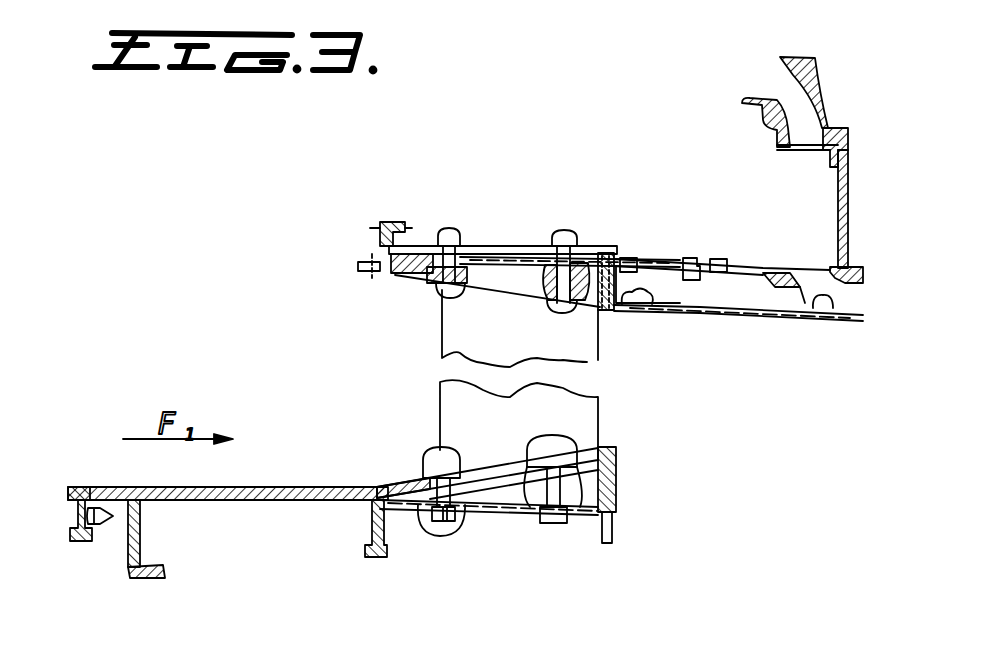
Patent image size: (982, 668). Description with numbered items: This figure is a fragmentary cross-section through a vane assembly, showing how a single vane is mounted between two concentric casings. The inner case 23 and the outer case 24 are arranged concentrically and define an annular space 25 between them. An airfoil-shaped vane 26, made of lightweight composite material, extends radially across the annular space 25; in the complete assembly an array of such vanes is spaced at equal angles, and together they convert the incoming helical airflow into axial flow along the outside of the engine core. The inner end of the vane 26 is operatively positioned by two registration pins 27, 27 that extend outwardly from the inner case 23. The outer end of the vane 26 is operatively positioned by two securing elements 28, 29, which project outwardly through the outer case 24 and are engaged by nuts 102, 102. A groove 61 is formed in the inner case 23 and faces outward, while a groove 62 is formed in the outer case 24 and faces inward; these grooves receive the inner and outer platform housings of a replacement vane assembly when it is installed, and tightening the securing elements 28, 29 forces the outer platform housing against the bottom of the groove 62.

The inner case 23 is at (502, 246).
The outer case 24 is at (503, 517).
The annular space 25 is at (438, 313).
The vane 26 is at (573, 424).
The registration pin 27 is at (580, 250).
The securing element 28 is at (424, 536).
The securing element 29 is at (612, 490).
The groove 61 is at (587, 362).
The groove 62 is at (490, 470).
The nut 102 is at (455, 515).